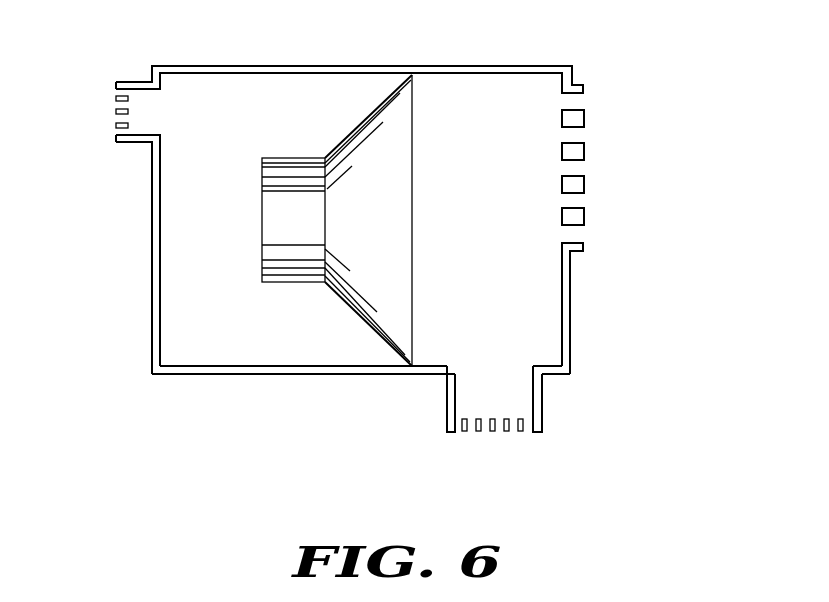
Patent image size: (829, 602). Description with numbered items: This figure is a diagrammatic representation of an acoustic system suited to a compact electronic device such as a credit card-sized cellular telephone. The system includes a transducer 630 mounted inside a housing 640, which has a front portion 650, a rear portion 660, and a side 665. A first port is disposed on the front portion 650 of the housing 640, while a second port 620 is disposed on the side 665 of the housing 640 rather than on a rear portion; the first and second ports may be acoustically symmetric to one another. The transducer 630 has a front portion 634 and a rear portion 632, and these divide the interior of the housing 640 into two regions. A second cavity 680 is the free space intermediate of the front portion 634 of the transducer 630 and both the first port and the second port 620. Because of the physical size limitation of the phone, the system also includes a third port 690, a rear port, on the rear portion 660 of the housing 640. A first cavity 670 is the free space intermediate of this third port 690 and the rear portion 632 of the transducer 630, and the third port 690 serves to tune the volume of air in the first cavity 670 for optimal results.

The second port 620 is at (493, 432).
The transducer 630 is at (374, 114).
The rear portion of the transducer 632 is at (258, 170).
The front portion of the transducer 634 is at (412, 218).
The housing 640 is at (175, 456).
The front portion of the housing 650 is at (571, 319).
The rear portion of the housing 660 is at (151, 305).
The side of the housing 665 is at (248, 376).
The first cavity 670 is at (207, 88).
The second cavity 680 is at (489, 88).
The third port 690 is at (115, 110).